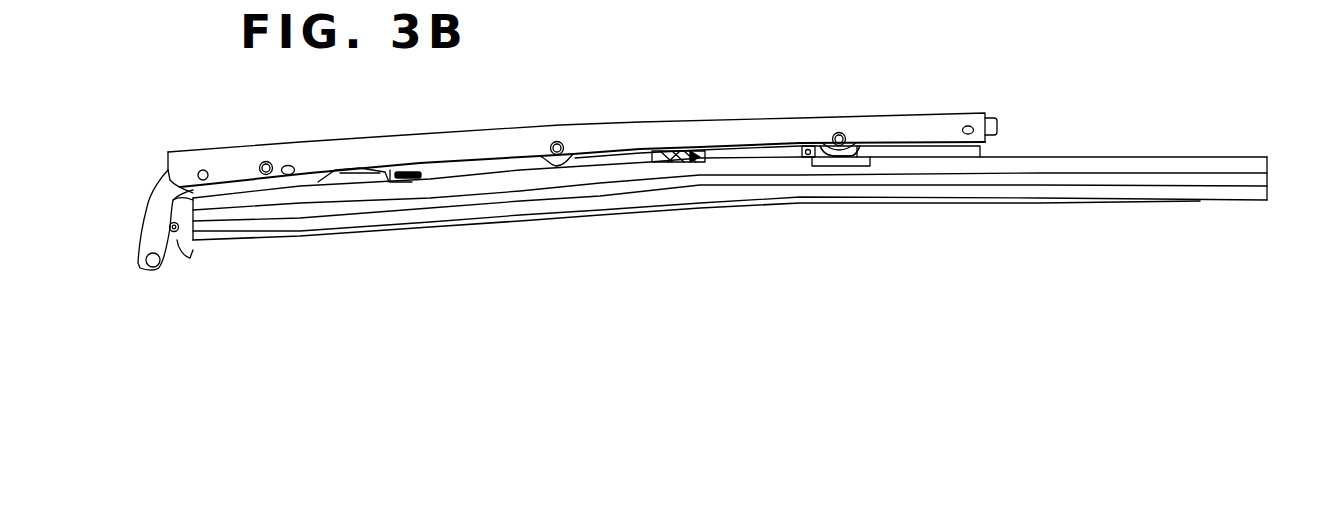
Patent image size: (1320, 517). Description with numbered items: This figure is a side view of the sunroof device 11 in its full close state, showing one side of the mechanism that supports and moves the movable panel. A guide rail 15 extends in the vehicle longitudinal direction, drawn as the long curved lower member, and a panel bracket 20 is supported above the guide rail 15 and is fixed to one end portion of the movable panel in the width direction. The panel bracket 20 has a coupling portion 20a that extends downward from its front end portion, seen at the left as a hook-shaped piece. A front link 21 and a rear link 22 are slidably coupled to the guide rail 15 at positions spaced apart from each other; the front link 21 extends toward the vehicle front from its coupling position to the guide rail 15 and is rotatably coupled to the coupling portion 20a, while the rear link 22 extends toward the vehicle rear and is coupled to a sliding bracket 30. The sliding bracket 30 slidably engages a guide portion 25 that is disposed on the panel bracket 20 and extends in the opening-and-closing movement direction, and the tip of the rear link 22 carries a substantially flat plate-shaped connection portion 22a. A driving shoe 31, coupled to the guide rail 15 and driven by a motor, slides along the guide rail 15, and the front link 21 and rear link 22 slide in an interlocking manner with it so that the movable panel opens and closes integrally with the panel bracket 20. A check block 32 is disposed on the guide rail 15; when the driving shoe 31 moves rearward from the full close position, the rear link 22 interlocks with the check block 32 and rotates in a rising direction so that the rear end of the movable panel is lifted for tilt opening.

The sunroof device 11 is at (135, 47).
The guide rail 15 is at (1194, 156).
The panel bracket 20 is at (618, 122).
The coupling portion 20a is at (145, 229).
The front link 21 is at (180, 243).
The rear link 22 is at (712, 164).
The connection portion 22a is at (840, 151).
The guide portion 25 is at (997, 119).
The sliding bracket 30 is at (870, 152).
The driving shoe 31 is at (347, 181).
The check block 32 is at (433, 174).